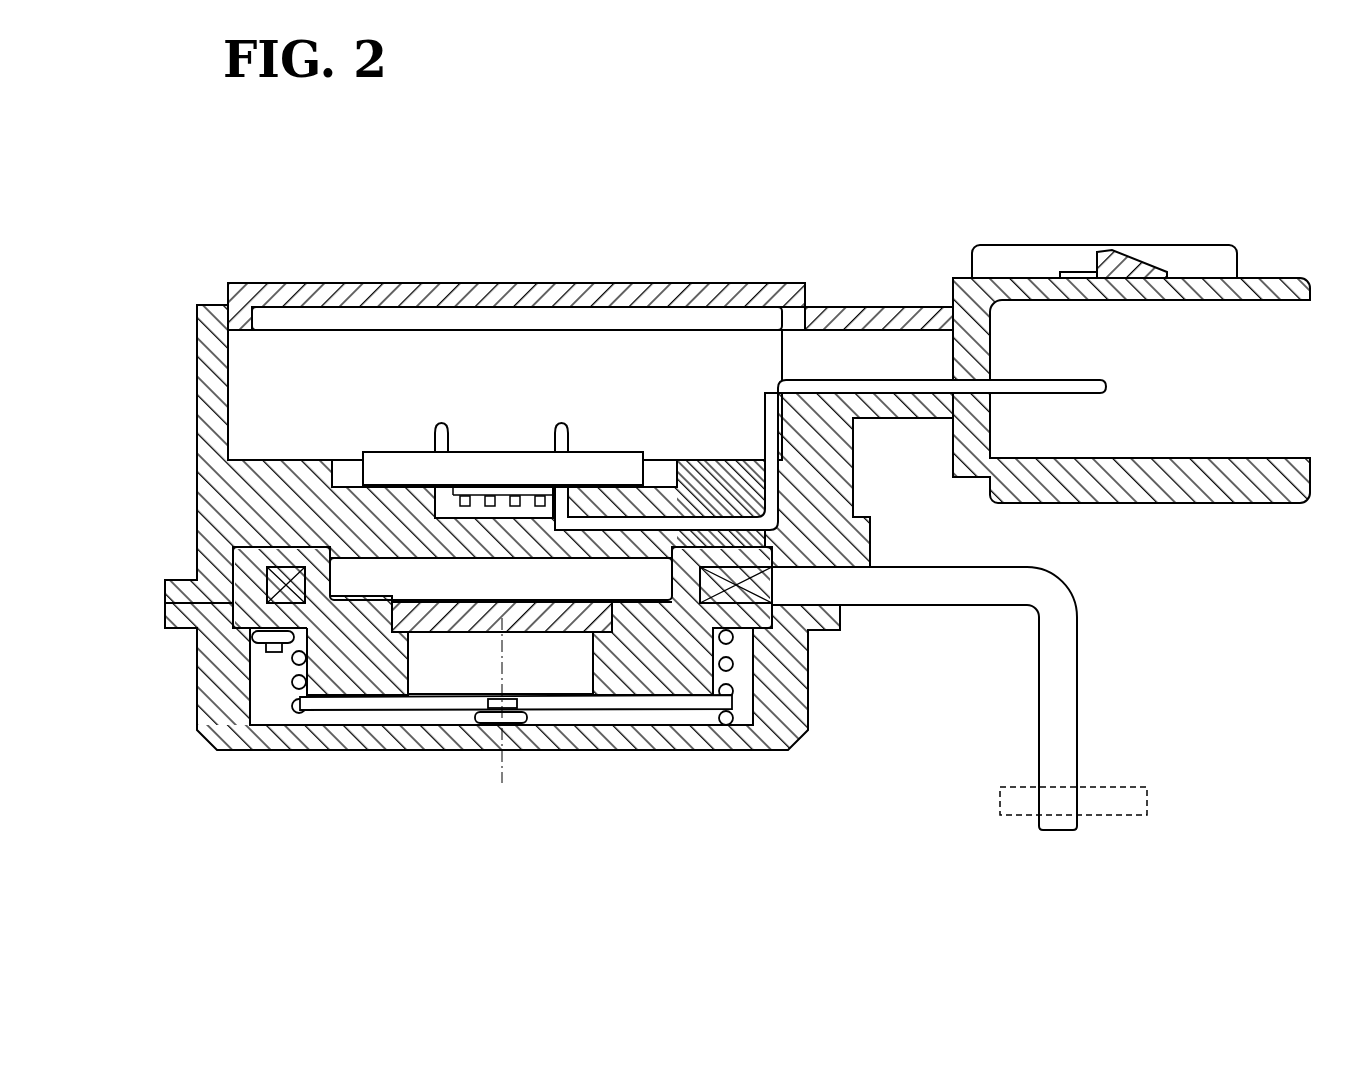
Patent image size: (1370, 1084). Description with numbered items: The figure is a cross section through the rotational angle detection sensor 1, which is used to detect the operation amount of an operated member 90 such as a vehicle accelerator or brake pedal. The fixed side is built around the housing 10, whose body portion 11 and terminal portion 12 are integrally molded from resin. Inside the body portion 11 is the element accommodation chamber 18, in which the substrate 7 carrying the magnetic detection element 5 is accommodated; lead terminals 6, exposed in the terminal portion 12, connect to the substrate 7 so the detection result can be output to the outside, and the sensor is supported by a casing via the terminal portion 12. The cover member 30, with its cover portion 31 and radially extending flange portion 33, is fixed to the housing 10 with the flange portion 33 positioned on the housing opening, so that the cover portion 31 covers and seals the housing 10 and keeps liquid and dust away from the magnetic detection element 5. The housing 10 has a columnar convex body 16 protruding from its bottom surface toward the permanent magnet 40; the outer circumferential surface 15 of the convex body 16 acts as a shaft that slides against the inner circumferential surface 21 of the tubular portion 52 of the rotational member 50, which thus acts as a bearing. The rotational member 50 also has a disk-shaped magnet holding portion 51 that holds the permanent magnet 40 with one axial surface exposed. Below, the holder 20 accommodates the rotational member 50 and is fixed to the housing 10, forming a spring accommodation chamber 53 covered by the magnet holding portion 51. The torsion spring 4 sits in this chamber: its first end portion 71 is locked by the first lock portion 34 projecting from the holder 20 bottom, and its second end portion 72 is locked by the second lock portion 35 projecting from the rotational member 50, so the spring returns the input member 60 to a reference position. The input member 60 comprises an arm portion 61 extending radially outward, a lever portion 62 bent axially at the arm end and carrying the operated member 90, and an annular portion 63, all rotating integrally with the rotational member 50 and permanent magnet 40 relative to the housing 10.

The rotational angle detection sensor 1 is at (193, 133).
The torsion spring 4 is at (400, 712).
The magnetic detection element 5 is at (497, 487).
The lead terminals 6 is at (1085, 383).
The substrate 7 is at (410, 460).
The housing 10 is at (432, 466).
The body portion 11 is at (197, 410).
The terminal portion 12 is at (1276, 278).
The outer circumferential surface 15 is at (700, 530).
The convex body 16 is at (490, 558).
The element accommodation chamber 18 is at (276, 391).
The holder 20 is at (461, 692).
The inner circumferential surface 21 is at (350, 552).
The cover member 30 is at (590, 286).
The cover portion 31 is at (525, 283).
The flange portion 33 is at (855, 307).
The first lock portion 34 is at (492, 698).
The second lock portion 35 is at (210, 660).
The permanent magnet 40 is at (565, 632).
The rotational member 50 is at (283, 610).
The magnet holding portion 51 is at (400, 597).
The tubular portion 52 is at (680, 567).
The spring accommodation chamber 53 is at (288, 714).
The input member 60 is at (987, 676).
The arm portion 61 is at (920, 568).
The lever portion 62 is at (1039, 745).
The annular portion 63 is at (192, 603).
The first end portion 71 is at (437, 725).
The second end portion 72 is at (255, 638).
The operated member 90 is at (1100, 778).